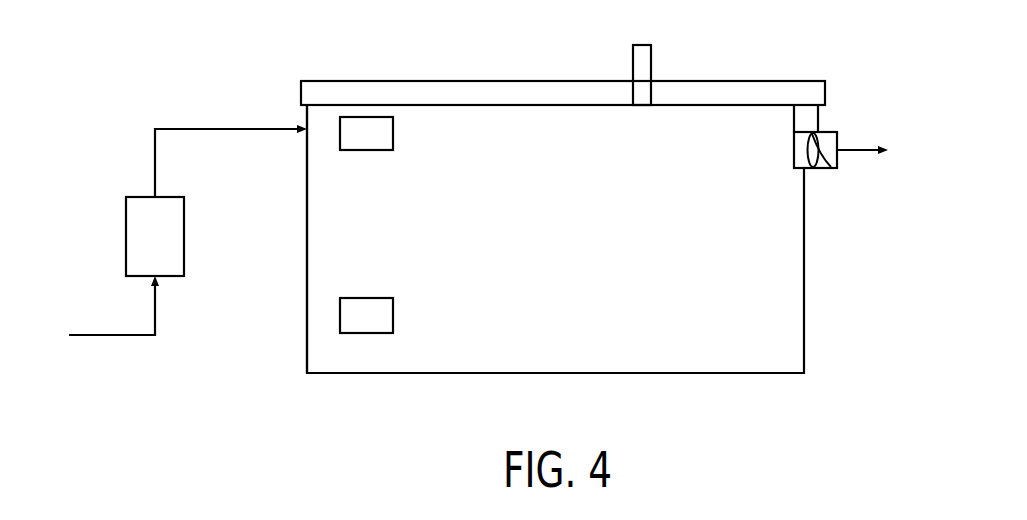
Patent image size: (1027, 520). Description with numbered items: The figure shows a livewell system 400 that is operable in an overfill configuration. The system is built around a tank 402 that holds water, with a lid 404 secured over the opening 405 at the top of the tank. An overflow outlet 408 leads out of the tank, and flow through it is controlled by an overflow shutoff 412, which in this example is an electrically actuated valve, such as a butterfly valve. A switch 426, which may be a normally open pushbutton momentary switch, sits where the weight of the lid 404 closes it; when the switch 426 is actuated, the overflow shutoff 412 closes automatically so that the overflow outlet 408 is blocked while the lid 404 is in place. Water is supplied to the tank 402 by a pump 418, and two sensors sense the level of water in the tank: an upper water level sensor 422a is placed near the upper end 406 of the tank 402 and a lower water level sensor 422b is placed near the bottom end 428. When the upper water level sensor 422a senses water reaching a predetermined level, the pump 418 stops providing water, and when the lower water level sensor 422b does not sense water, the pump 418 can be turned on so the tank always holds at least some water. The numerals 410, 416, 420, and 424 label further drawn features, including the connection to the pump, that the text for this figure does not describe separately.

The livewell system 400 is at (793, 50).
The tank 402 is at (805, 295).
The lid 404 is at (523, 81).
The opening 405 is at (319, 112).
The upper end 406 is at (435, 98).
The overflow outlet 408 is at (826, 131).
The lid bottom surface 410 is at (524, 112).
The overflow shutoff 412 is at (828, 170).
The inlet conduit 416 is at (233, 128).
The pump 418 is at (184, 238).
The supply line 420 is at (112, 337).
The upper water level sensor 422a is at (370, 152).
The lower water level sensor 422b is at (367, 298).
The post / port 424 is at (641, 45).
The switch 426 is at (792, 116).
The bottom end 428 is at (585, 378).